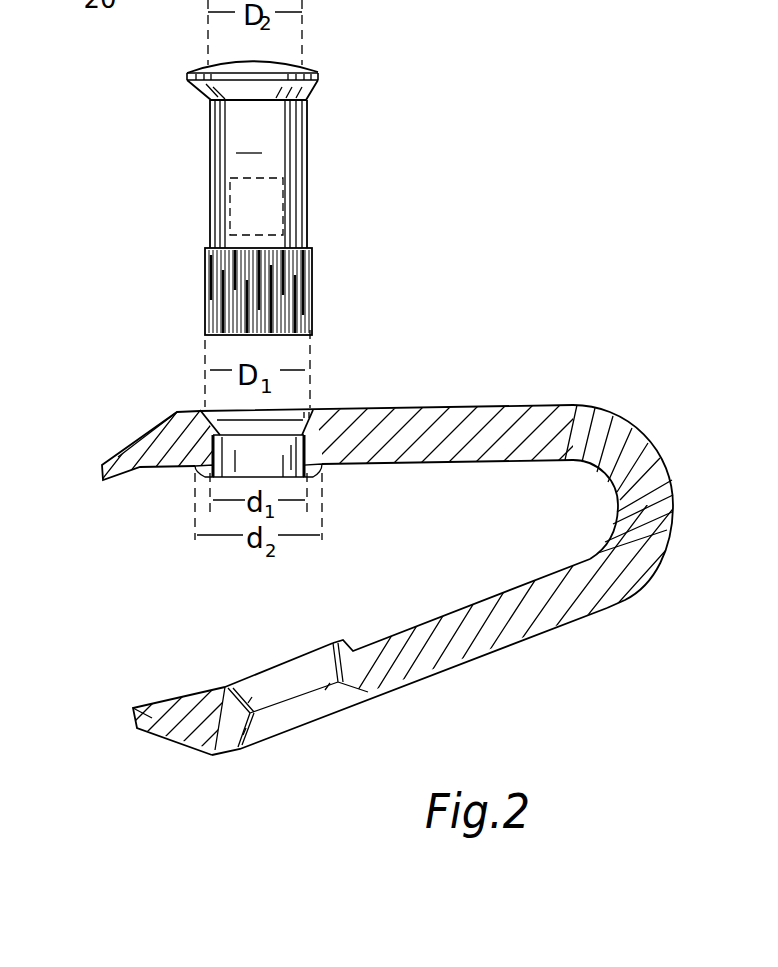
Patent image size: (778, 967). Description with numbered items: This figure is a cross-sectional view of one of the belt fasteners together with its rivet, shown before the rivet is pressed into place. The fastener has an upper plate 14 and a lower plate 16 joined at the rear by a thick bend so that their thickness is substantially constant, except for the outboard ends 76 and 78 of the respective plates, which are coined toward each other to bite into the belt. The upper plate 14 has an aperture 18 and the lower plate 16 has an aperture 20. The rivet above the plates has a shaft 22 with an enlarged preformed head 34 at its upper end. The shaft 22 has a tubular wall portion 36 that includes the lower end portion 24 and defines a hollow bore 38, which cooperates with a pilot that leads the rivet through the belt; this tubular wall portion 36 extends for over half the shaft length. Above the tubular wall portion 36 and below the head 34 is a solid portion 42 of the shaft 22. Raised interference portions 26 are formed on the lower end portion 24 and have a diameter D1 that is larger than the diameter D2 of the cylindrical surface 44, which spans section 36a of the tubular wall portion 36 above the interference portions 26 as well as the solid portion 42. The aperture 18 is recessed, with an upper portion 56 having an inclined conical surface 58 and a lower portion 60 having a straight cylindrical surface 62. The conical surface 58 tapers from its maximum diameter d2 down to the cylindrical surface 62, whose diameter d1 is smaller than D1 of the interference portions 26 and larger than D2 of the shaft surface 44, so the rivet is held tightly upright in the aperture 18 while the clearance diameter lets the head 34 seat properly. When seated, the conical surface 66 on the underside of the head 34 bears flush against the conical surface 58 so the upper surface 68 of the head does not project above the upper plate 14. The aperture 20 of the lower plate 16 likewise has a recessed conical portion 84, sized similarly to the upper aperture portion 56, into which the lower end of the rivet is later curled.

The upper plate 14 is at (389, 475).
The lower plate 16 is at (515, 625).
The aperture 18 is at (243, 431).
The aperture 20 is at (389, 579).
The shaft 22 is at (277, 171).
The lower end portion 24 is at (277, 288).
The interference portions 26 is at (207, 297).
The preformed head 34 is at (264, 69).
The tubular wall portion 36 is at (307, 238).
The section of tubular wall portion 36a is at (307, 197).
The hollow bore 38 is at (213, 203).
The solid portion 42 is at (298, 140).
The cylindrical surface 44 is at (247, 141).
The upper portion 56 is at (210, 414).
The conical surface 58 is at (318, 410).
The lower portion 60 is at (221, 458).
The cylindrical surface 62 is at (322, 464).
The conical surface 66 is at (200, 96).
The upper surface 68 is at (314, 65).
The outboard end 76 is at (118, 457).
The outboard end 78 is at (162, 720).
The recessed conical portion 84 is at (323, 703).